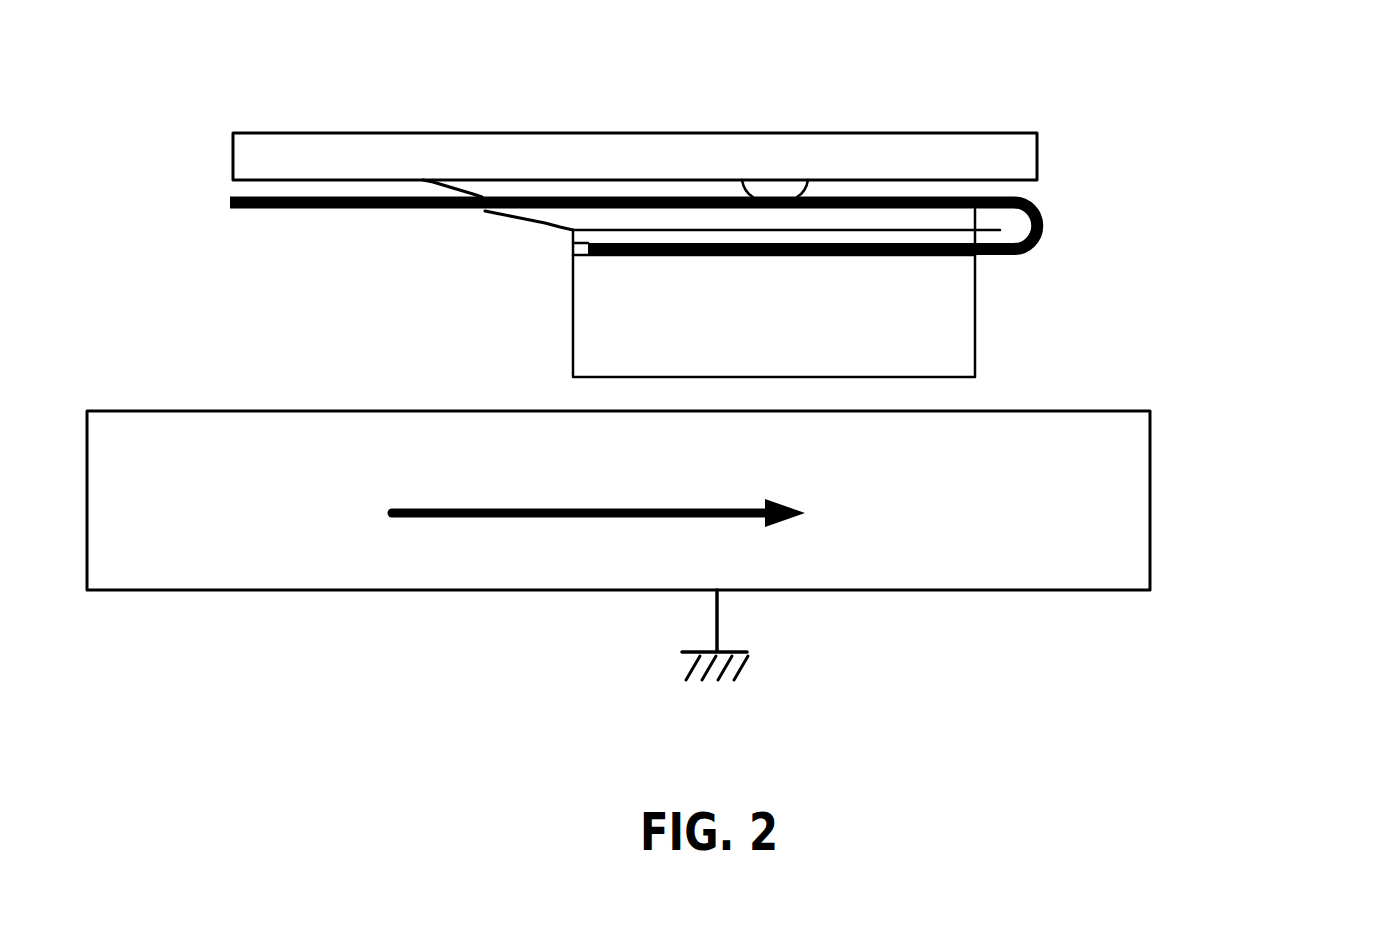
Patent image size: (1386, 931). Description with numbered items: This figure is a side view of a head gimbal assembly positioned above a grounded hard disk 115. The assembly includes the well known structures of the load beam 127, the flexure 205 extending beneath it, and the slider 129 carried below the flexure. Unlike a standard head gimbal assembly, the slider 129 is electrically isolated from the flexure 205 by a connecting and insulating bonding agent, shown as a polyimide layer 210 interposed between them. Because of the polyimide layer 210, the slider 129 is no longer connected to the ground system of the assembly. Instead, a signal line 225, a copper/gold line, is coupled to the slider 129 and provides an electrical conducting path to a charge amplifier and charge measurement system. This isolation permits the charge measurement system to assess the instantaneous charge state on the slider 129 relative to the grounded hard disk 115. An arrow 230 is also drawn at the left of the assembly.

The hard disk 115 is at (1173, 490).
The load beam 127 is at (1066, 154).
The slider 129 is at (1004, 338).
The flexure 205 is at (1006, 207).
The polyimide layer 210 is at (1005, 230).
The signal line 225 is at (1057, 252).
The direction of belt travel 230 is at (208, 212).